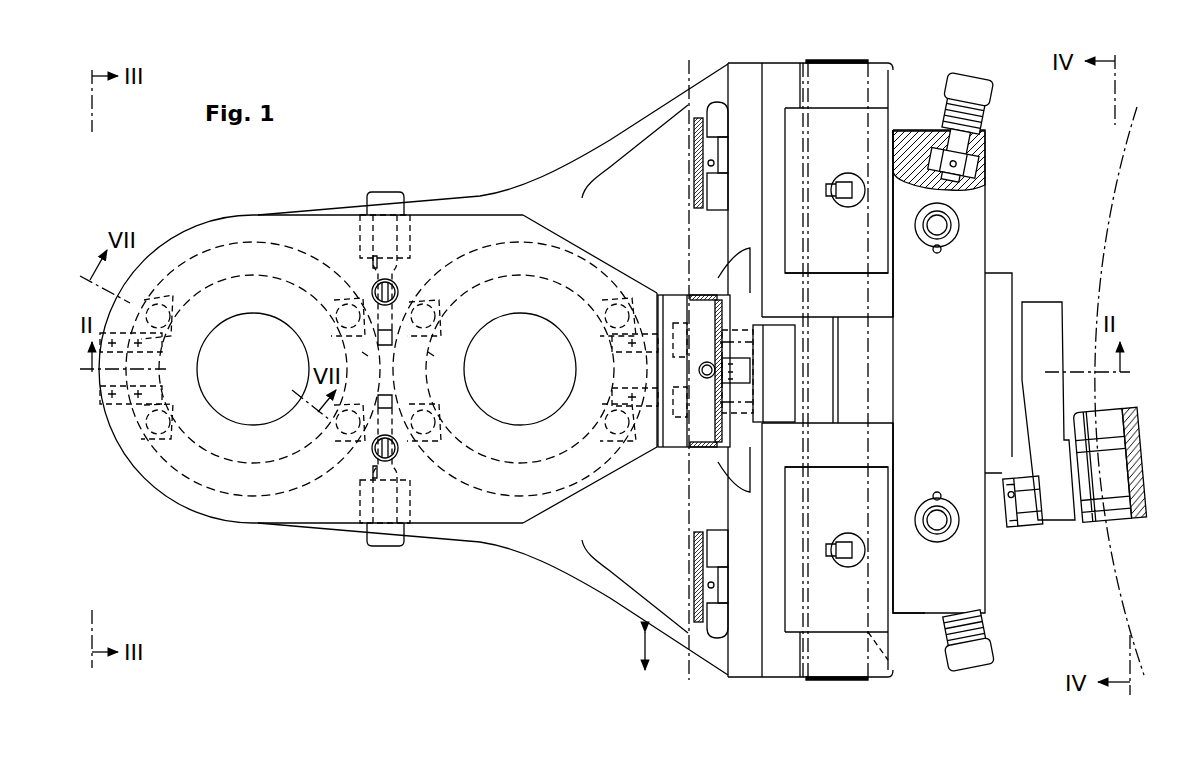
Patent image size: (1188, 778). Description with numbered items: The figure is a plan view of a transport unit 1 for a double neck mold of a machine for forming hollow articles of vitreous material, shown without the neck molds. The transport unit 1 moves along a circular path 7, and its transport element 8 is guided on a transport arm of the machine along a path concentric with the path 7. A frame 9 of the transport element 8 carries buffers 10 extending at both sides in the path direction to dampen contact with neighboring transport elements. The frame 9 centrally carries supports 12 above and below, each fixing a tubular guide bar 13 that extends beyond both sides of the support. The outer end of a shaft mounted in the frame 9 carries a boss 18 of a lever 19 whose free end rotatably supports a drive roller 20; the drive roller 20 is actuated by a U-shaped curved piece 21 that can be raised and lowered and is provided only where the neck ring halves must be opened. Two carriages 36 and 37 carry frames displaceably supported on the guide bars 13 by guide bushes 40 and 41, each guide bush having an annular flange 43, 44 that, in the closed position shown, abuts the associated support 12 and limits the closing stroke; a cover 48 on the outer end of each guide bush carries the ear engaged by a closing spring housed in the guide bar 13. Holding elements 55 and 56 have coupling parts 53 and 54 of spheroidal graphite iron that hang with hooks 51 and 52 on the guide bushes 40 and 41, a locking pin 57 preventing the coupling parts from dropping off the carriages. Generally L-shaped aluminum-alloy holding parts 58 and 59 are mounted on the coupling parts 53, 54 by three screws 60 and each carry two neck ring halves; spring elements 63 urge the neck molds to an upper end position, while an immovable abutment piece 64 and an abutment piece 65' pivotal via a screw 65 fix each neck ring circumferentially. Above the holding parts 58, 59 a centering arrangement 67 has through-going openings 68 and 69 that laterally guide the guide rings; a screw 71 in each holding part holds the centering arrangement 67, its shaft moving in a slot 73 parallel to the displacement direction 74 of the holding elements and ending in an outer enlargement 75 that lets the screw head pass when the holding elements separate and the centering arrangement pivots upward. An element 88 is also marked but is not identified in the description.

The transport unit 1 is at (552, 592).
The circular path 7 is at (1104, 204).
The transport element 8 is at (986, 236).
The frame 9 is at (985, 190).
The buffers 10 is at (992, 94).
The supports 12 is at (834, 423).
The tubular guide bar 13 is at (878, 352).
The boss 18 is at (1044, 302).
The lever 19 is at (1054, 522).
The drive roller 20 is at (1130, 452).
The U-shaped curved piece 21 is at (1140, 500).
The carriage 36 is at (894, 616).
The carriage 37 is at (895, 128).
The guide bush 40 is at (803, 63).
The guide bush 41 is at (888, 662).
The annular flange 43 is at (880, 420).
The annular flange 44 is at (893, 322).
The cover 48 is at (858, 60).
The hook 51 is at (890, 446).
The hook 52 is at (890, 85).
The coupling part 53 is at (788, 679).
The coupling part 54 is at (771, 62).
The holding element 55 is at (603, 588).
The holding element 56 is at (613, 137).
The locking pin 57 is at (725, 160).
The holding part 58 is at (326, 526).
The holding part 59 is at (335, 211).
The screws 60 is at (716, 102).
The spring elements 63 is at (165, 301).
The immovable abutment piece 64 is at (160, 346).
The screw 65 is at (407, 368).
The pivotal abutment piece 65' is at (406, 368).
The centering arrangement 67 is at (569, 245).
The through-going opening 68 is at (208, 376).
The through-going opening 69 is at (477, 382).
The screw 71 is at (392, 290).
The slot 73 is at (373, 262).
The displacement direction 74 is at (643, 648).
The outer enlargement 75 is at (403, 233).
The spring strip 88 is at (696, 198).